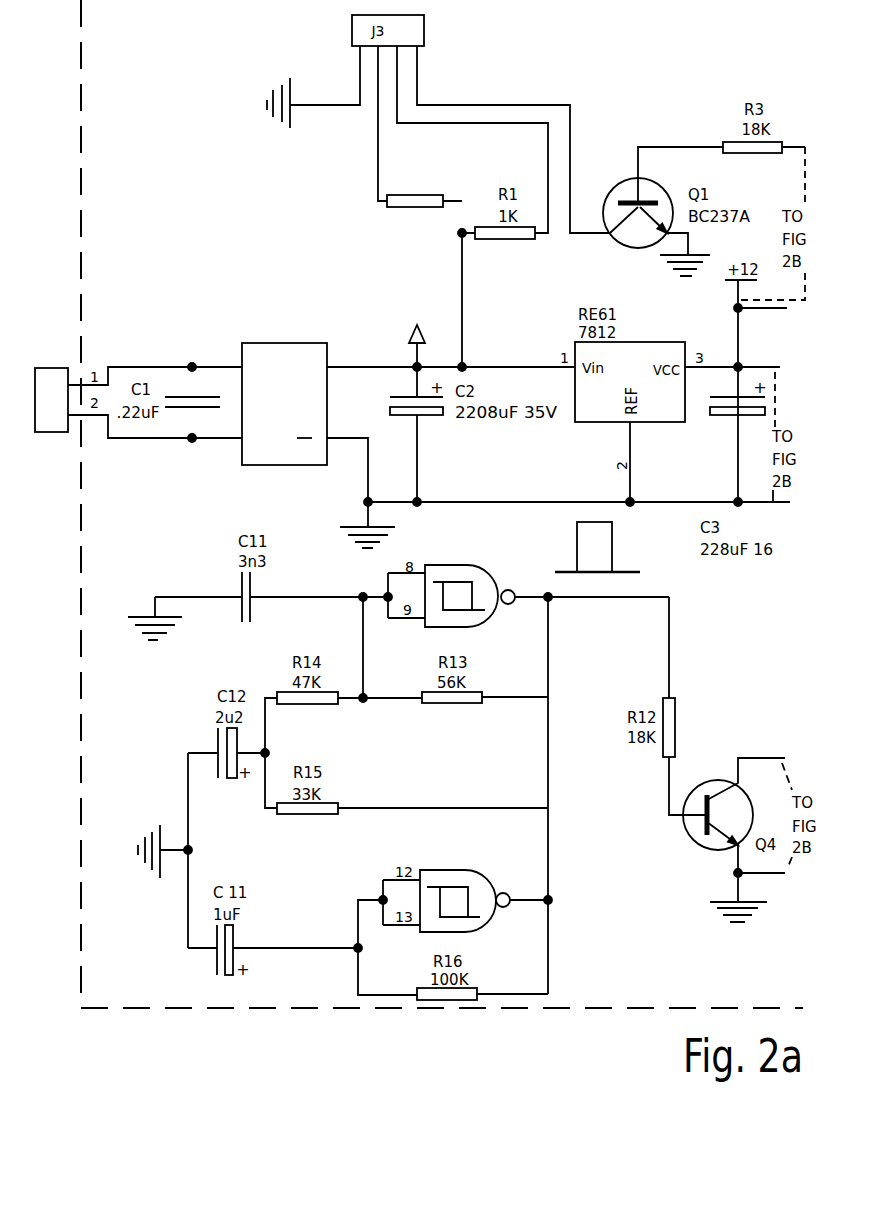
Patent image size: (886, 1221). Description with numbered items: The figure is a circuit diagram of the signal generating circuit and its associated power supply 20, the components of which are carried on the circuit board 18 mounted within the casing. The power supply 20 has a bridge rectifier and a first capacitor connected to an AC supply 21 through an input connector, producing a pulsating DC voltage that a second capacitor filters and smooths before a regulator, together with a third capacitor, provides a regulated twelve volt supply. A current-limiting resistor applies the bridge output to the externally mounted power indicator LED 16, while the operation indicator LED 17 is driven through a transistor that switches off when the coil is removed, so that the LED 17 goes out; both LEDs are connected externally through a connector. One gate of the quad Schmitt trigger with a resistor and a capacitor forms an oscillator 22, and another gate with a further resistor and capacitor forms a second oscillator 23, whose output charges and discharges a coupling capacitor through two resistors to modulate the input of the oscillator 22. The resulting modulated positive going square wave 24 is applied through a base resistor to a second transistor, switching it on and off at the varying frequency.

The indicator 16 is at (353, 129).
The further indicator 17 is at (513, 139).
The circuit board 18 is at (592, 589).
The power supply 20 is at (226, 323).
The AC supply 21 is at (48, 440).
The oscillator 22 is at (556, 652).
The oscillator 23 is at (558, 872).
The modulated square wave output signal 24 is at (606, 581).